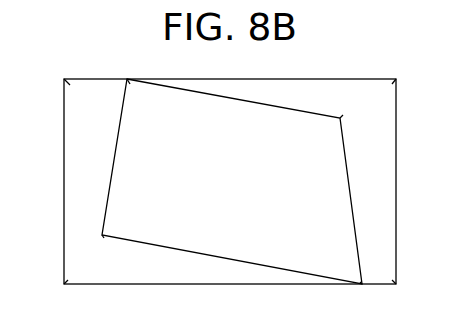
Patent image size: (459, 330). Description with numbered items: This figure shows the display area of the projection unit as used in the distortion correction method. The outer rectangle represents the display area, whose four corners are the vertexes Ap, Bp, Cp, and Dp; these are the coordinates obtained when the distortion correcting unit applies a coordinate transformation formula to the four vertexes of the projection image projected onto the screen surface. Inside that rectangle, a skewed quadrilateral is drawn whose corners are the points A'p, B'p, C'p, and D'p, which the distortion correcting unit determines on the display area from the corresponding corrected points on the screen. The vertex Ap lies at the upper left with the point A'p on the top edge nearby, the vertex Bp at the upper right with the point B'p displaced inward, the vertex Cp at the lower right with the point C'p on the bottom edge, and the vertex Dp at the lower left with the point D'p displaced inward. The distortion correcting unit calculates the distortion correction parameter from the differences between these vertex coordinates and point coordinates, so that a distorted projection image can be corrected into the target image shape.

The vertex Ap of the display area Ap is at (55, 69).
The point A'p on the display area A'p is at (145, 68).
The vertex Bp of the display area Bp is at (407, 68).
The point B'p on the display area B'p is at (358, 105).
The vertex Cp of the display area Cp is at (409, 295).
The point C'p on the display area C'p is at (360, 297).
The vertex Dp of the display area Dp is at (54, 294).
The point D'p on the display area D'p is at (100, 252).